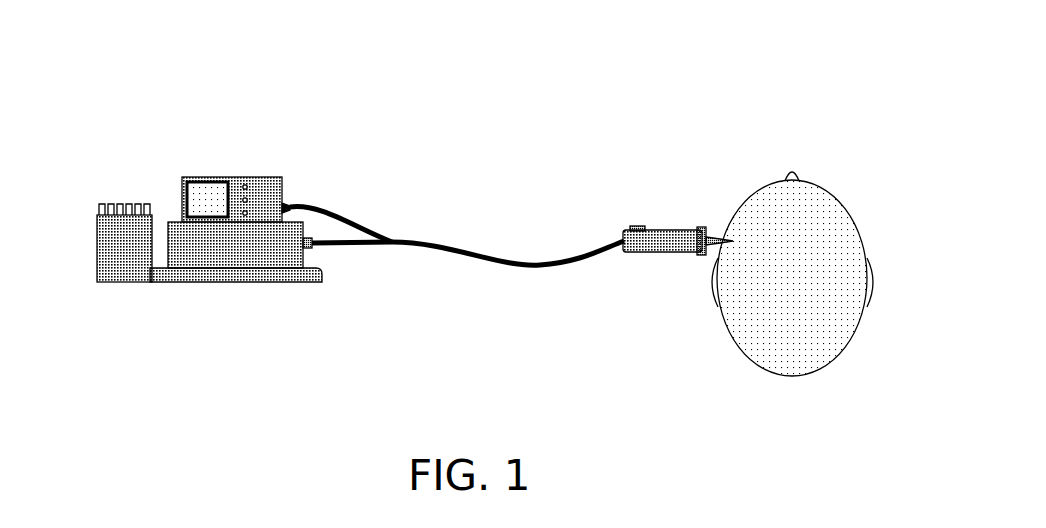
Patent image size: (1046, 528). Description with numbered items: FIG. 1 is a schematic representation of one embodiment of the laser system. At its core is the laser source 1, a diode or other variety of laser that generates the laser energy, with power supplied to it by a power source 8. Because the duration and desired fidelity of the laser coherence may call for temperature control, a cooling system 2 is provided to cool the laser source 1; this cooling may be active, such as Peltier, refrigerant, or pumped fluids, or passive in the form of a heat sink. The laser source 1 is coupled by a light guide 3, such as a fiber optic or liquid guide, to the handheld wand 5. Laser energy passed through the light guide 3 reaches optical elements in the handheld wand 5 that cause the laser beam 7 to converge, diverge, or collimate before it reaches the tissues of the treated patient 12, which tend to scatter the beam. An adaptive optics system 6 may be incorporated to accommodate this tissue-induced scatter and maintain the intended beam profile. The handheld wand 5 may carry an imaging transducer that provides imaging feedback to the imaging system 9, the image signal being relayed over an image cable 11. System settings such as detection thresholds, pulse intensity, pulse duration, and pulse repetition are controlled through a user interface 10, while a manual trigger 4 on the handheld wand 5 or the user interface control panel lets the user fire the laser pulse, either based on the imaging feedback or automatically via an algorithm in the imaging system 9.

The laser source 1 is at (230, 258).
The cooling system 2 is at (285, 283).
The light guide 3 is at (350, 244).
The manual trigger 4 is at (636, 227).
The handheld wand 5 is at (680, 230).
The adaptive optics system 6 is at (700, 227).
The laser beam 7 is at (722, 238).
The power source 8 is at (122, 216).
The imaging system 9 is at (200, 186).
The user interface 10 is at (245, 185).
The image cable 11 is at (320, 201).
The treated patient 12 is at (780, 355).